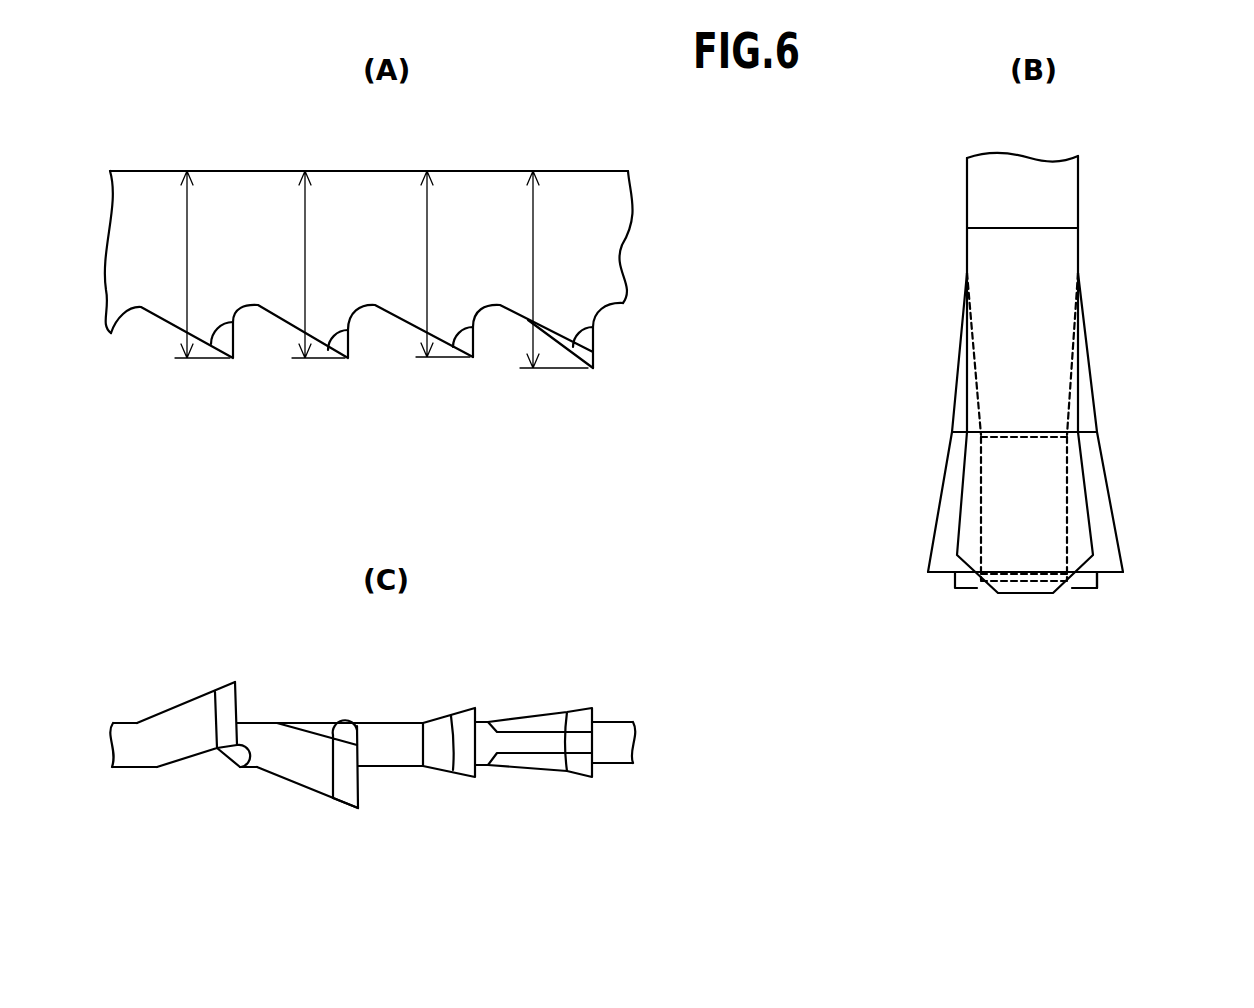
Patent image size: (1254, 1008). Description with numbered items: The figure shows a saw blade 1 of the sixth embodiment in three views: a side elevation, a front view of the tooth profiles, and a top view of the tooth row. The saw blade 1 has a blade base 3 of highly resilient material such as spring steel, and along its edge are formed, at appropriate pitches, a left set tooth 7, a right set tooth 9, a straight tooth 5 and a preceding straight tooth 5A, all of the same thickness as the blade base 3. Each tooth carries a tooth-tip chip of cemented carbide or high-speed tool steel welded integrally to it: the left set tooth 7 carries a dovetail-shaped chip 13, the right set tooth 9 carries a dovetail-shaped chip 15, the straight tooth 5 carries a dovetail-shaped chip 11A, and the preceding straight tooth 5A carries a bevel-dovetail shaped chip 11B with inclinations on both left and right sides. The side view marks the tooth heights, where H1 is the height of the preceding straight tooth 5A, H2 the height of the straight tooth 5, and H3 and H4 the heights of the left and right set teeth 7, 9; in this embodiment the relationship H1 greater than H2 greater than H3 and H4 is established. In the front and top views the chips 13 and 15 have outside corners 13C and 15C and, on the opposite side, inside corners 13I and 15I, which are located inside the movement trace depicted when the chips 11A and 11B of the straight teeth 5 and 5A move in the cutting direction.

The saw blade 1 is at (570, 162).
The blade base 3 is at (500, 197).
The straight tooth 5 is at (417, 314).
The preceding straight tooth 5A is at (570, 318).
The left set tooth 7 is at (173, 318).
The right set tooth 9 is at (293, 318).
The chip on tooth tip 11A is at (466, 340).
The chip on tooth tip 11B is at (586, 342).
The chip on tooth tip 13 is at (224, 344).
The outside corner 13C is at (928, 568).
The inside corner 13I is at (1073, 590).
The chip on tooth tip 15 is at (343, 344).
The outside corner 15C is at (1122, 568).
The inside corner 15I is at (977, 590).
The height of the straight tooth 5A H1 is at (554, 269).
The height of the straight tooth 5 H2 is at (443, 264).
The height of the left set tooth H3 is at (202, 264).
The height of the right set tooth H4 is at (319, 264).